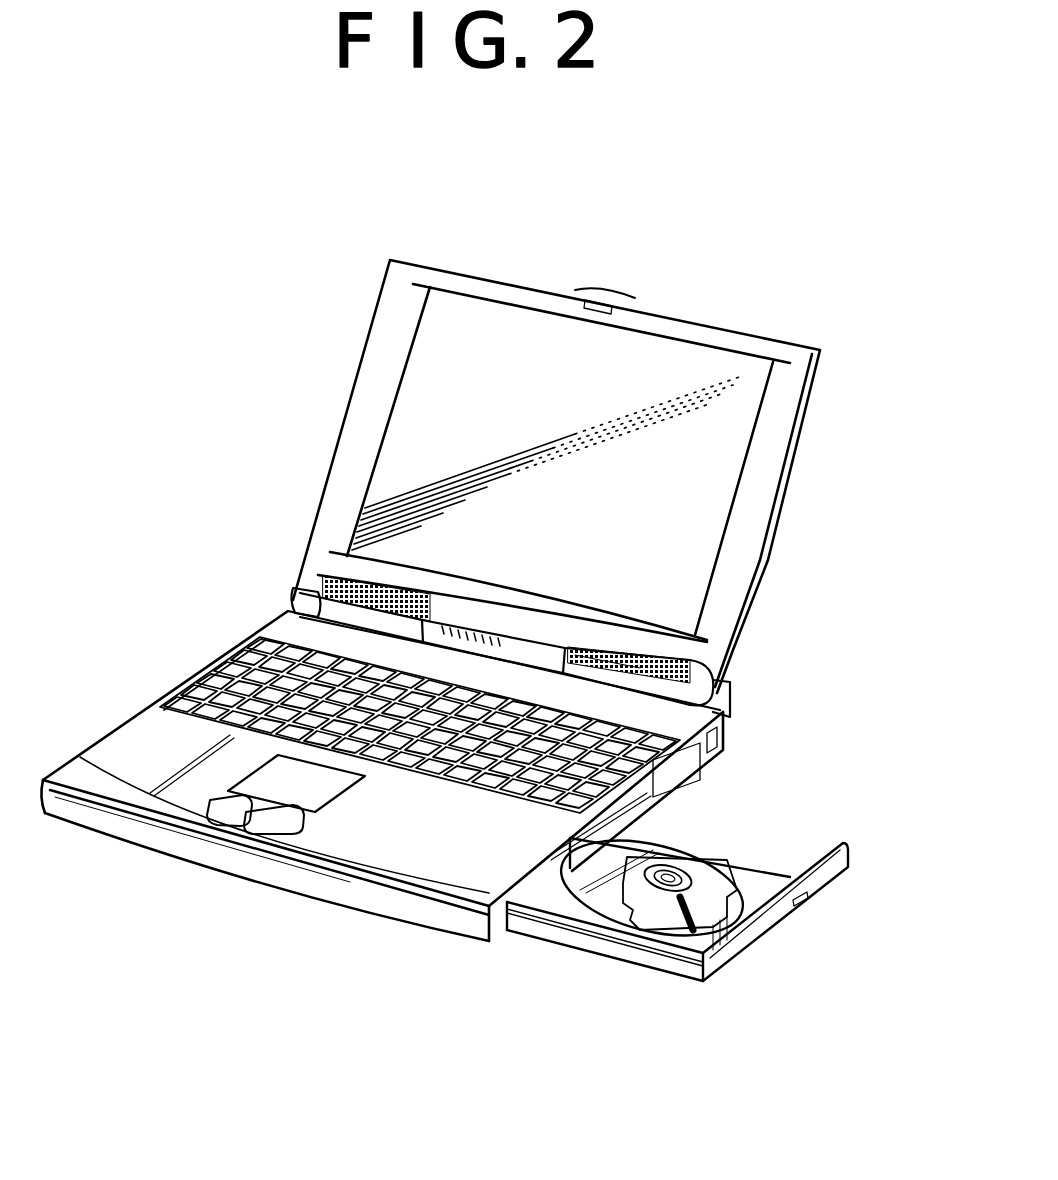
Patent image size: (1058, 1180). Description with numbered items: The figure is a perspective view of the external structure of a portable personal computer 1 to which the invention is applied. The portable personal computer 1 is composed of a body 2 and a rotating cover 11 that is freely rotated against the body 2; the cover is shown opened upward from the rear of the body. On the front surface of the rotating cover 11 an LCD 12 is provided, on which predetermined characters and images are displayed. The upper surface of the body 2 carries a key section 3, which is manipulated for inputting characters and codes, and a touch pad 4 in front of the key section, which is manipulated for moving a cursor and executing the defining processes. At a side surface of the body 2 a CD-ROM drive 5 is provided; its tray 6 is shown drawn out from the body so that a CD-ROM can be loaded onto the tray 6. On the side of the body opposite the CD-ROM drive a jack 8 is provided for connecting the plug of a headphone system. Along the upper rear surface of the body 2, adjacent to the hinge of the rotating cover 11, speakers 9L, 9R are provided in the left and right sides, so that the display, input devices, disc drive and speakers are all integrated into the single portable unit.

The portable personal computer 1 is at (222, 890).
The body 2 is at (120, 827).
The key section 3 is at (205, 696).
The touch pad 4 is at (310, 803).
The CD-ROM drive 5 is at (766, 856).
The tray 6 is at (733, 953).
The jack 8 is at (231, 631).
The speaker 9L is at (303, 567).
The speaker 9R is at (733, 670).
The rotating cover 11 is at (743, 537).
The LCD 12 is at (723, 440).